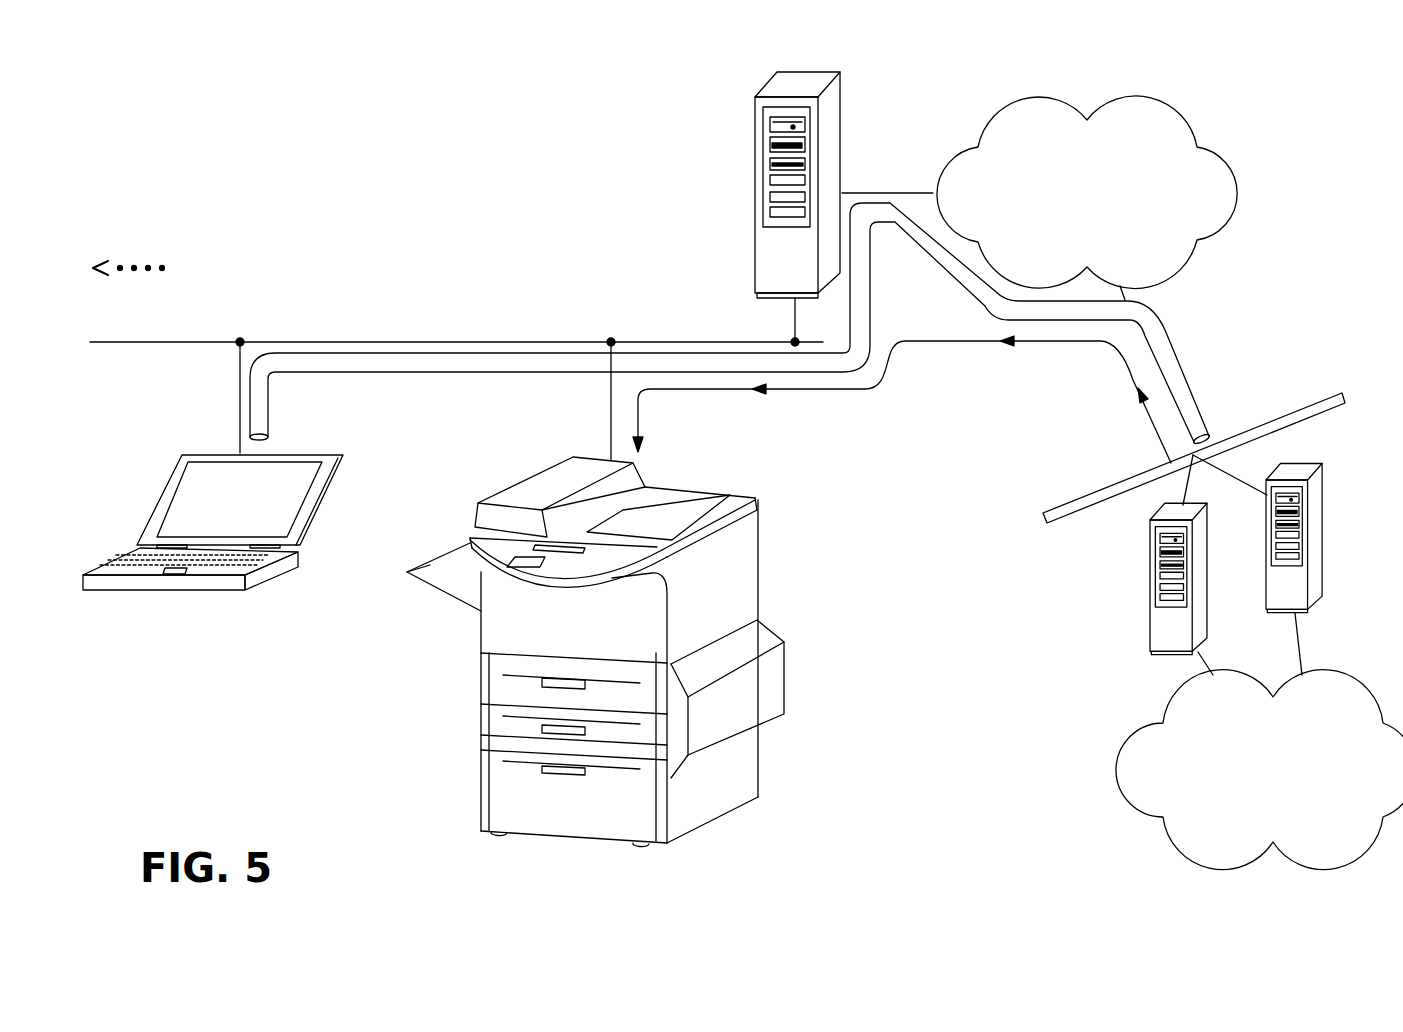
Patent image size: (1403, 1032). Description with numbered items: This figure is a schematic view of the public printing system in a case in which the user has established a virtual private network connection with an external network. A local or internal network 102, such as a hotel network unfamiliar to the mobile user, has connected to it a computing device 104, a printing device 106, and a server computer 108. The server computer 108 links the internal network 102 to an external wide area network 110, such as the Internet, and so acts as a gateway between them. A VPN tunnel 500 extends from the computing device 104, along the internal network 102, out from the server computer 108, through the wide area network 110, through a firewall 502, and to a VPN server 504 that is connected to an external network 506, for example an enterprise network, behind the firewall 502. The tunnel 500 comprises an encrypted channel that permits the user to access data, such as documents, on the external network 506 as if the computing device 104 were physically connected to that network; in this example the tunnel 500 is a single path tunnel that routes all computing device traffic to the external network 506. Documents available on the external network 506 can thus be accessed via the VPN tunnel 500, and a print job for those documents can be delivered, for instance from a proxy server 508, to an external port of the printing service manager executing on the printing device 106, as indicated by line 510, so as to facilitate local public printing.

The internal network 102 is at (500, 235).
The computing device 104 is at (270, 570).
The printing device 106 is at (704, 797).
The server computer 108 is at (767, 268).
The wide area network 110 is at (1066, 236).
The VPN tunnel 500 is at (360, 360).
The firewall 502 is at (1313, 405).
The VPN server 504 is at (1317, 583).
The external network 506 is at (1252, 812).
The proxy server 508 is at (1160, 638).
The line 510 is at (957, 343).